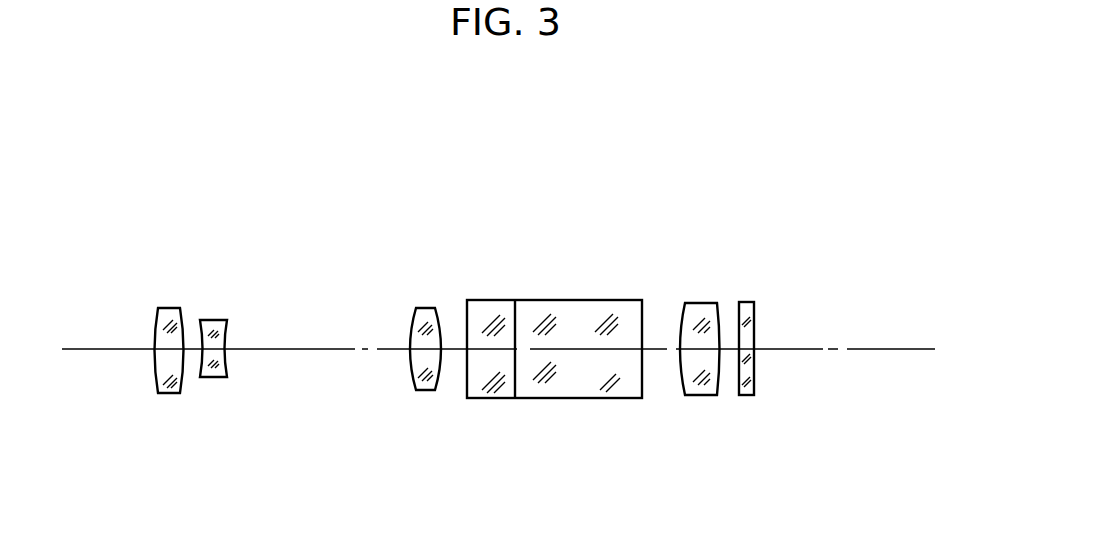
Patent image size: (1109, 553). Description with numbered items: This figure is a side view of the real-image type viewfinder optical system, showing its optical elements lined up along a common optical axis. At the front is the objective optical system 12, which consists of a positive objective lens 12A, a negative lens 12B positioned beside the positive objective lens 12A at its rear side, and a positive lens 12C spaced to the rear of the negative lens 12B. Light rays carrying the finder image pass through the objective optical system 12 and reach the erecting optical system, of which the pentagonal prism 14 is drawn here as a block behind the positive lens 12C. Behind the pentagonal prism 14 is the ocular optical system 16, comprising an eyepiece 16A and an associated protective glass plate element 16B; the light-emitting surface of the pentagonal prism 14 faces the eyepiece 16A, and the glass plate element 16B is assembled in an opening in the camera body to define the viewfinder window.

The objective optical system 12 is at (323, 263).
The positive objective lens 12A is at (173, 308).
The negative lens 12B is at (213, 320).
The positive lens 12C is at (427, 308).
The pentagonal prism 14 is at (557, 407).
The ocular optical system 16 is at (748, 407).
The eyepiece 16A is at (703, 397).
The protective glass plate element 16B is at (757, 372).